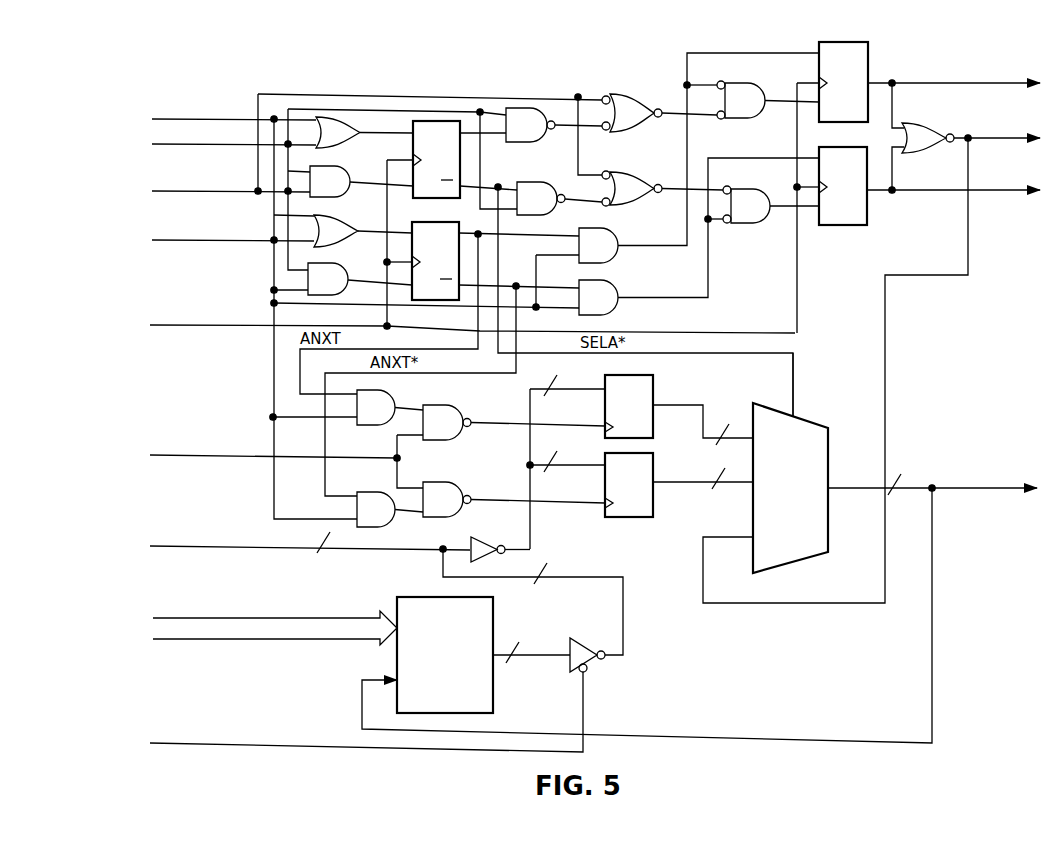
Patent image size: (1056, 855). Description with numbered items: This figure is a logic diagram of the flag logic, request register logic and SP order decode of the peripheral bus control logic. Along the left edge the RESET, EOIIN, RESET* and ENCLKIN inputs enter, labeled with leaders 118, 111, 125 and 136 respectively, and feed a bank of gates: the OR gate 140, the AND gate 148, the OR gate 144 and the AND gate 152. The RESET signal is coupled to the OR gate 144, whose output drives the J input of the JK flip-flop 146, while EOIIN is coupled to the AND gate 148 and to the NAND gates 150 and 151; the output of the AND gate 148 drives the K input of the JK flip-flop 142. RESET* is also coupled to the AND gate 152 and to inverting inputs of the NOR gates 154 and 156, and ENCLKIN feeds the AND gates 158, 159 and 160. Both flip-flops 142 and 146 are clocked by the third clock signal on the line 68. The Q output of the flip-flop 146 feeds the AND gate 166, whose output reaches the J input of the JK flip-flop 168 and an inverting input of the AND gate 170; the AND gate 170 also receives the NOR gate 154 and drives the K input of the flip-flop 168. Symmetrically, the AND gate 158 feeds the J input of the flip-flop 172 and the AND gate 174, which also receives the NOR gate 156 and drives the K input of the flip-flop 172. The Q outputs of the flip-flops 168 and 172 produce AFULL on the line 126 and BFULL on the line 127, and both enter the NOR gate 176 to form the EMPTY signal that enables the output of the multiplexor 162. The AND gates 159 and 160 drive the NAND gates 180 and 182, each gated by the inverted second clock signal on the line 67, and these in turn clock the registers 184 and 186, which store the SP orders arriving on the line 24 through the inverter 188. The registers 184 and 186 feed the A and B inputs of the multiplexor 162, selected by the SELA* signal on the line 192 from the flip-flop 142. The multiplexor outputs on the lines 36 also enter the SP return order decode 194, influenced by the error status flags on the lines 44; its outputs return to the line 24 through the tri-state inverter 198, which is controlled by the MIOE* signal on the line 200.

The RESET signal line 118 is at (160, 119).
The EOIIN signal line 111 is at (170, 144).
The RESET* signal line 125 is at (166, 192).
The ENCLKIN signal line 136 is at (165, 241).
The line transmitting the CLK 3 clock signal 68 is at (177, 327).
The line transmitting the CLK 2* clock signal 67 is at (165, 455).
The lines transmitting SP orders (SP 1-4*) 24 is at (165, 546).
The lines supplying error correction and detection status flag signals 44 is at (200, 618).
The line transmitting the MIOE* signal 200 is at (238, 743).
The line transmitting the AFULL signal 126 is at (915, 86).
The line transmitting the BFULL signal 127 is at (972, 192).
The lines transmitting the SP orders 36 is at (956, 492).
The OR gate 140 is at (352, 141).
The AND gate 148 is at (343, 190).
The OR gate 144 is at (350, 240).
The AND gate 152 is at (341, 288).
The JK flip-flop 142 is at (410, 149).
The JK flip-flop 146 is at (428, 221).
The NAND gate 150 is at (539, 133).
The NAND gate 151 is at (549, 207).
The NOR gate 154 is at (645, 121).
The NOR gate 156 is at (645, 197).
The AND gate 166 is at (610, 254).
The AND gate 158 is at (610, 306).
The AND gate 170 is at (756, 109).
The AND gate 174 is at (762, 215).
The JK flip-flop 168 is at (868, 63).
The JK flip-flop 172 is at (826, 226).
The NOR gate 176 is at (936, 146).
The AND gate 159 is at (388, 416).
The AND gate 160 is at (388, 518).
The NAND gate 180 is at (455, 431).
The NAND gate 182 is at (455, 508).
The register 184 is at (653, 397).
The register 186 is at (653, 488).
The multiplexor 162 is at (829, 445).
The line transmitting the SELA* signal 192 is at (797, 388).
The inverter 188 is at (471, 541).
The SP return order decode 194 is at (441, 596).
The tri-state inverter 198 is at (568, 641).